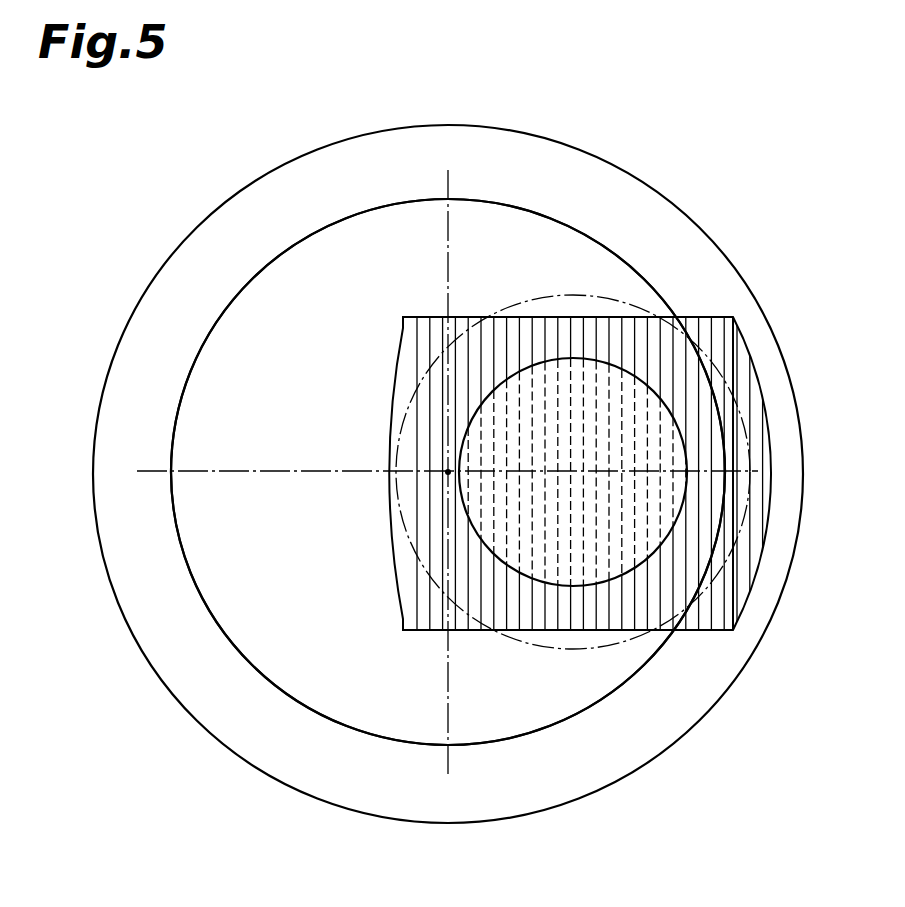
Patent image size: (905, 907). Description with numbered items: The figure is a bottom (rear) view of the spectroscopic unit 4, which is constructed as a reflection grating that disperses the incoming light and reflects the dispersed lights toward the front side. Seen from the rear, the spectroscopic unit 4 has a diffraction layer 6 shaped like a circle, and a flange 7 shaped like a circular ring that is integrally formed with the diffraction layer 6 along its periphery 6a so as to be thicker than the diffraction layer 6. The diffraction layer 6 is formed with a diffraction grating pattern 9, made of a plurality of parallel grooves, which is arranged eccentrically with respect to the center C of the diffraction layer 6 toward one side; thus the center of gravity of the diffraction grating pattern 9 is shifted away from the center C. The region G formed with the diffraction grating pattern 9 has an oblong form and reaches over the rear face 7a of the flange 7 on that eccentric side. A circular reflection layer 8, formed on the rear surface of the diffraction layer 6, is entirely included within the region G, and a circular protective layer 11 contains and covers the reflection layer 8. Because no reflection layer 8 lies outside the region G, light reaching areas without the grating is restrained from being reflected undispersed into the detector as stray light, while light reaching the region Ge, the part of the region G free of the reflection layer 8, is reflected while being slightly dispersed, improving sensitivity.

The spectroscopic unit 4 is at (448, 453).
The diffraction layer 6 is at (448, 513).
The periphery of the diffraction layer 6a is at (615, 693).
The flange 7 is at (197, 224).
The rear face of the flange 7a is at (683, 252).
The reflection layer 8 is at (553, 360).
The diffraction grating pattern 9 is at (416, 613).
The protective layer 11 is at (402, 422).
The center of the diffraction layer C is at (447, 473).
The region formed with the diffraction grating pattern G is at (555, 485).
The region free of the reflection layer in the grating region Ge is at (530, 498).